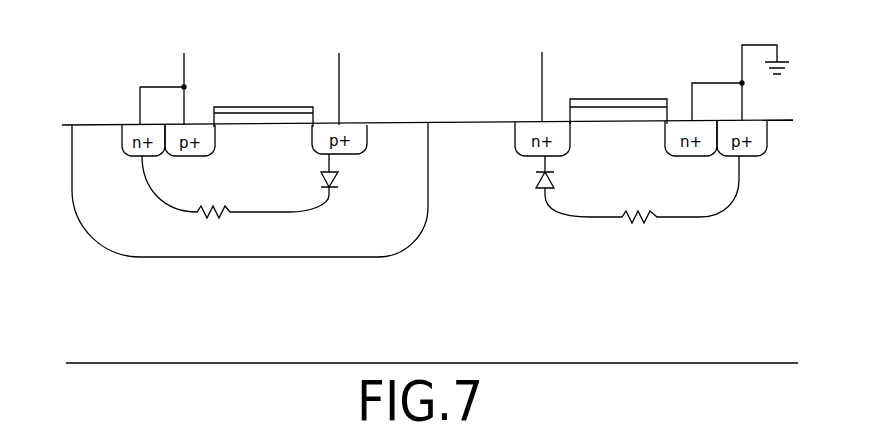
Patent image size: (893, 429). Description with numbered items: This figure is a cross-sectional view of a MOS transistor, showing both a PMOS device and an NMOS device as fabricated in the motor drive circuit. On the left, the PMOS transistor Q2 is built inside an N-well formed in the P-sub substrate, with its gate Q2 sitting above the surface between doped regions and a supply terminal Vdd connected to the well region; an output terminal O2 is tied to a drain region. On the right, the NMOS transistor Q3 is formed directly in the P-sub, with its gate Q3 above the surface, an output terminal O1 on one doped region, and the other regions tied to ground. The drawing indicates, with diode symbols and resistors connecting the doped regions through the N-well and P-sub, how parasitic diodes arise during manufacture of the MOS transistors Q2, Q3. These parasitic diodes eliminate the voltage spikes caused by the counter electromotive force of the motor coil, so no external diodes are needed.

The supply voltage terminal Vdd is at (170, 71).
The MOS transistor Q2 is at (260, 107).
The output terminal O2 is at (338, 71).
The output terminal O1 is at (541, 69).
The MOS transistor Q3 is at (617, 99).
The N-well region N-well is at (250, 189).
The P-type substrate P-sub is at (432, 348).